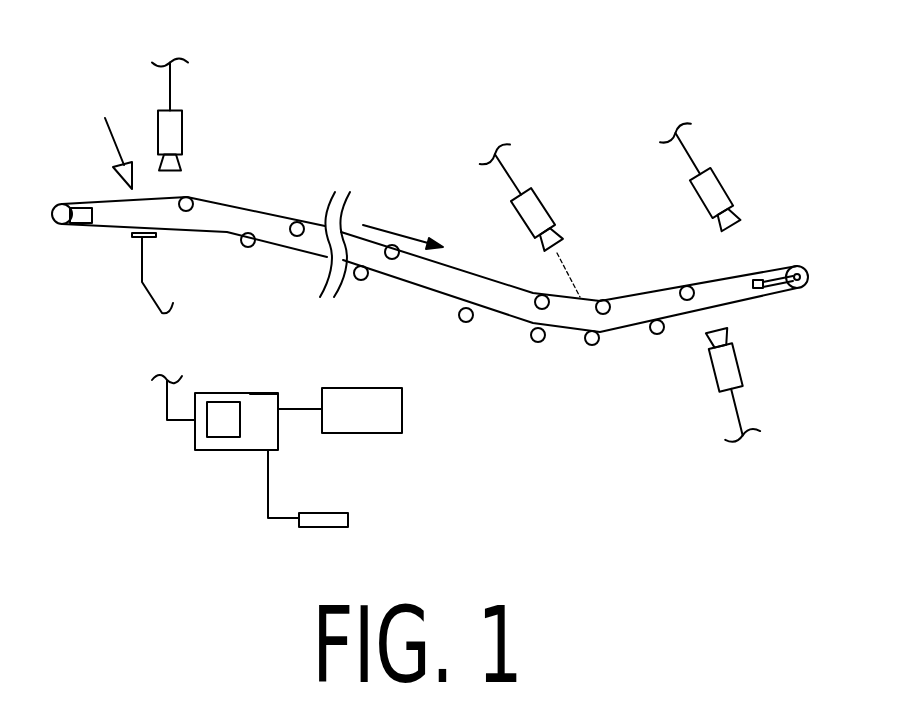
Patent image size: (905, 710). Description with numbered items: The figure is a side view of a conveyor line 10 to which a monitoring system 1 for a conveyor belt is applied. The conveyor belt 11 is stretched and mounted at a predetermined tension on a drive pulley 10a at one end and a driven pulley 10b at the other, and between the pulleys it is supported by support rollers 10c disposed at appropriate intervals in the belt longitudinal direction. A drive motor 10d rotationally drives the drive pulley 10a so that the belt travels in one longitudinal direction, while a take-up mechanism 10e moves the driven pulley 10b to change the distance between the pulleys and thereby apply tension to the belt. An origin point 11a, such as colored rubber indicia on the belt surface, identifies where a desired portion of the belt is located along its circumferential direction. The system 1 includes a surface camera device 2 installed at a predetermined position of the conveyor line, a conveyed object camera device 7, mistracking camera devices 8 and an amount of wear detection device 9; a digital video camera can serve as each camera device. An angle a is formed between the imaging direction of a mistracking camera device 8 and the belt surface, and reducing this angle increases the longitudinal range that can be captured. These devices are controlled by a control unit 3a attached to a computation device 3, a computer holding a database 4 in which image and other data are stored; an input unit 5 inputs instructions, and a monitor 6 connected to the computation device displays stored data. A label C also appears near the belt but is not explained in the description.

The monitoring system 1 is at (432, 118).
The surface camera device 2 is at (718, 375).
The computation device 3 is at (227, 452).
The control unit 3a is at (260, 400).
The database 4 is at (222, 408).
The input unit 5 is at (325, 518).
The monitor 6 is at (393, 420).
The conveyed object camera device 7 is at (177, 138).
The mistracking camera device 8 is at (542, 210).
The amount of wear detection device 9 is at (145, 237).
The conveyor line 10 is at (295, 200).
The drive pulley 10a is at (61, 206).
The driven pulley 10b is at (792, 266).
The support rollers 10c is at (250, 248).
The drive motor 10d is at (77, 226).
The take-up mechanism 10e is at (768, 289).
The conveyor belt 11 is at (493, 318).
The origin point 11a is at (228, 205).
The conveyed article C is at (113, 136).
The angle a is at (563, 290).